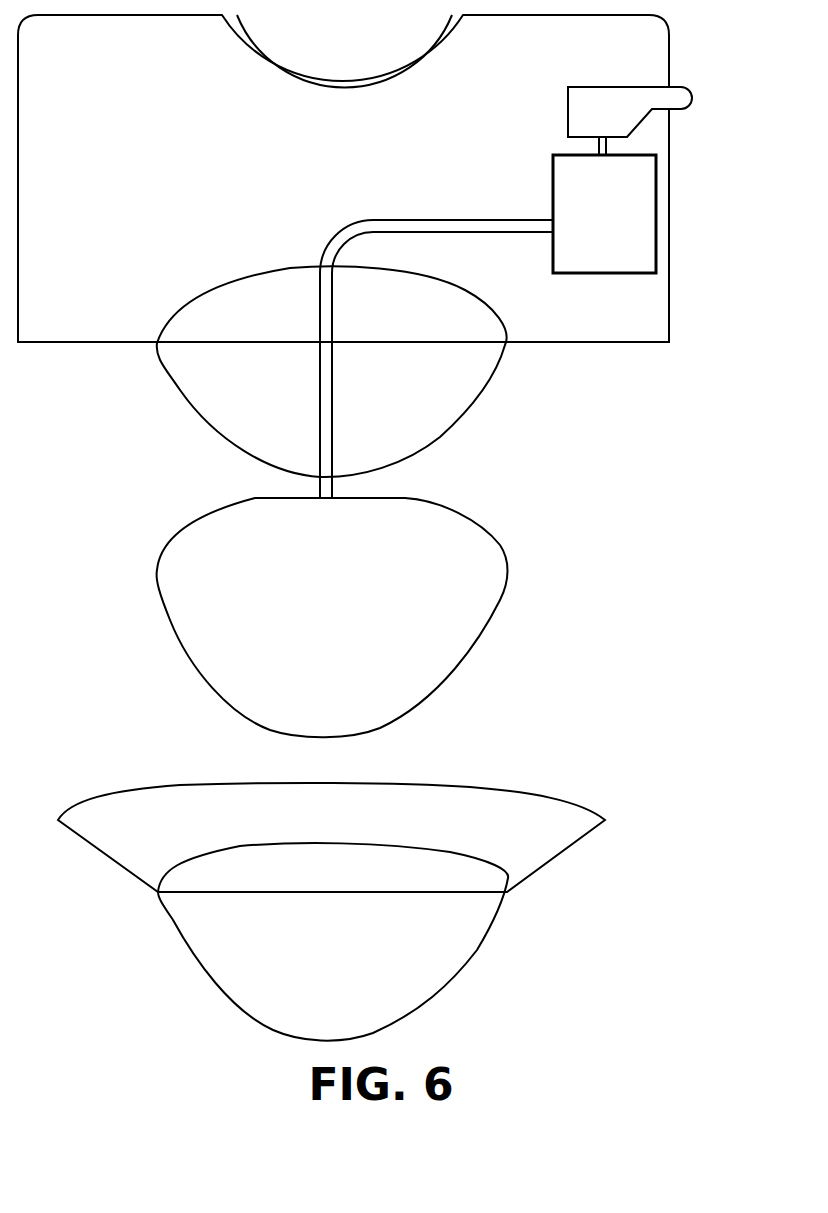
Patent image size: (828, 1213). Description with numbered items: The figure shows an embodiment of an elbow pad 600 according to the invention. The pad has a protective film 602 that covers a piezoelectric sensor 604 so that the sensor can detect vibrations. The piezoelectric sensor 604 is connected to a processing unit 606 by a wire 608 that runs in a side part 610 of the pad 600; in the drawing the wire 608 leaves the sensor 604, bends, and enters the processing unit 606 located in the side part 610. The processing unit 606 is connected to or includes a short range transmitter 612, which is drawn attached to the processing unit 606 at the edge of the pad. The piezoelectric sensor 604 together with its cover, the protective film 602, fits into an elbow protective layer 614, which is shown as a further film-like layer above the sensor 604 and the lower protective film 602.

The elbow pad 600 is at (707, 380).
The protective film 602 is at (427, 872).
The piezoelectric sensor 604 is at (253, 578).
The processing unit 606 is at (657, 206).
The wire 608 is at (432, 218).
The side part 610 is at (684, 308).
The short range transmitter 612 is at (619, 87).
The elbow protective layer 614 is at (457, 346).